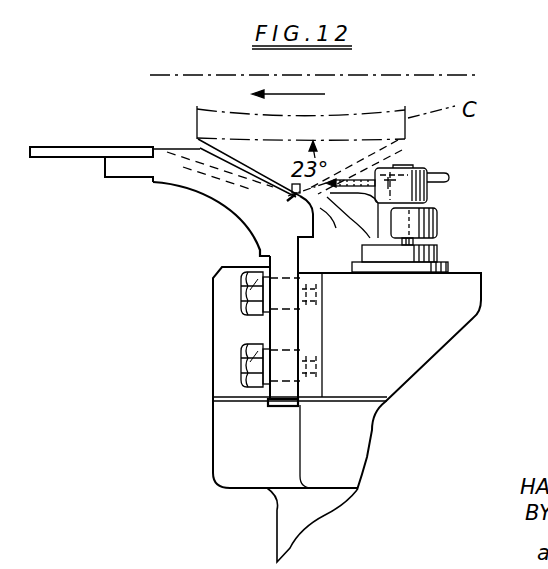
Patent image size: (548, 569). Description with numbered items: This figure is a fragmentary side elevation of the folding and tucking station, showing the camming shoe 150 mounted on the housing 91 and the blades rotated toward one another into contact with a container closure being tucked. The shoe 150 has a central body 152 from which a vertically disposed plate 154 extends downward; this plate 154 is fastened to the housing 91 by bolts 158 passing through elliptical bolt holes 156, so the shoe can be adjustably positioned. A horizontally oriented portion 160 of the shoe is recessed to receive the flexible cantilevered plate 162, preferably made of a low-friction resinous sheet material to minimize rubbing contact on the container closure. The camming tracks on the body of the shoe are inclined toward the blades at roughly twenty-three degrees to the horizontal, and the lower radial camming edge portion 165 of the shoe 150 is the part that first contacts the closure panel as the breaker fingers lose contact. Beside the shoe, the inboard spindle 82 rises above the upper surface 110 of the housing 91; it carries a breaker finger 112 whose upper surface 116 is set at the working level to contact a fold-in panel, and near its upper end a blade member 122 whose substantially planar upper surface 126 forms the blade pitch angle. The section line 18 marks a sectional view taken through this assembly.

The section line 18- 18 is at (453, 70).
The camming shoe 150 is at (168, 145).
The flexible cantilevered plate 162 is at (67, 152).
The horizontally oriented portion 160 is at (140, 168).
The central body 152 is at (243, 198).
The vertically disposed plate 154 is at (278, 330).
The bolts 158 is at (245, 296).
The housing 91 is at (208, 381).
The elliptical bolt holes 156 is at (283, 347).
The upper surface of housing 110 is at (474, 271).
The upper surface of breaker finger 116 is at (344, 170).
The inboard spindle 82 is at (404, 166).
The blade member 122 is at (446, 191).
The upper surface of blade 126 is at (436, 172).
The breaker finger 112 is at (446, 234).
The lower radial camming edge portion 165 is at (350, 224).